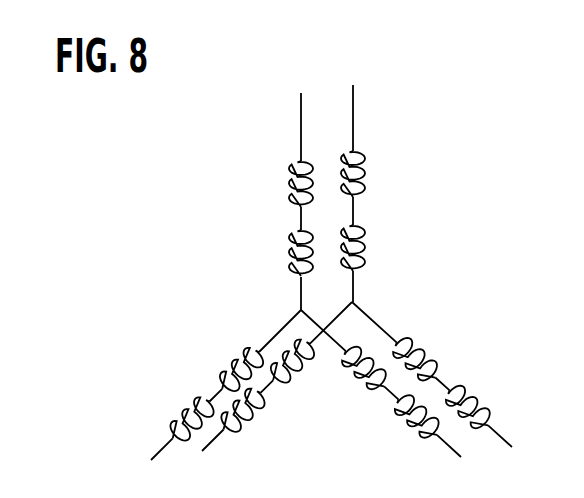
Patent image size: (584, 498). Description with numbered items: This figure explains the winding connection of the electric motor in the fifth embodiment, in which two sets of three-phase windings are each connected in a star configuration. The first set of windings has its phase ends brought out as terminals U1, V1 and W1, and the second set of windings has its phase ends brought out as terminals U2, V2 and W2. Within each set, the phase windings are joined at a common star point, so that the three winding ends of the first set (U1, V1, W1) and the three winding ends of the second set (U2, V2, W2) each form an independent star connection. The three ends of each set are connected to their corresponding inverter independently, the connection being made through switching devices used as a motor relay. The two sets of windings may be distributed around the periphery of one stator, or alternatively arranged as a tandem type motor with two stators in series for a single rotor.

The first U-phase winding terminal U1 is at (298, 187).
The second U-phase winding terminal U2 is at (358, 183).
The first V-phase winding terminal V1 is at (209, 400).
The second V-phase winding terminal V2 is at (261, 397).
The first W-phase winding terminal W1 is at (395, 399).
The second W-phase winding terminal W2 is at (451, 395).